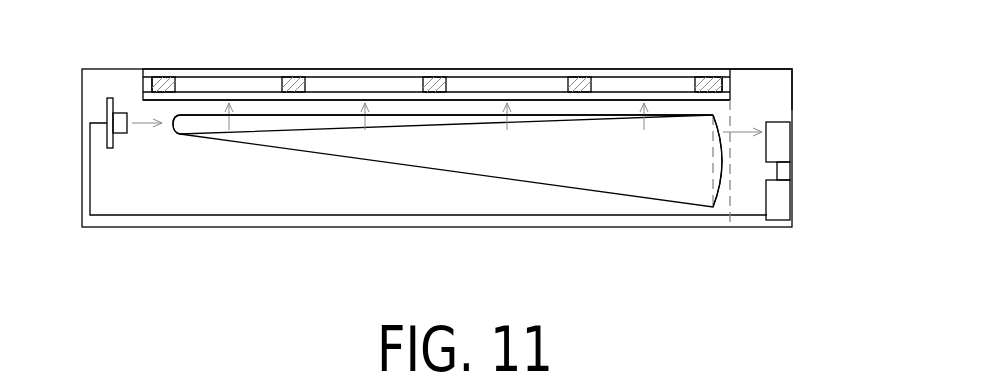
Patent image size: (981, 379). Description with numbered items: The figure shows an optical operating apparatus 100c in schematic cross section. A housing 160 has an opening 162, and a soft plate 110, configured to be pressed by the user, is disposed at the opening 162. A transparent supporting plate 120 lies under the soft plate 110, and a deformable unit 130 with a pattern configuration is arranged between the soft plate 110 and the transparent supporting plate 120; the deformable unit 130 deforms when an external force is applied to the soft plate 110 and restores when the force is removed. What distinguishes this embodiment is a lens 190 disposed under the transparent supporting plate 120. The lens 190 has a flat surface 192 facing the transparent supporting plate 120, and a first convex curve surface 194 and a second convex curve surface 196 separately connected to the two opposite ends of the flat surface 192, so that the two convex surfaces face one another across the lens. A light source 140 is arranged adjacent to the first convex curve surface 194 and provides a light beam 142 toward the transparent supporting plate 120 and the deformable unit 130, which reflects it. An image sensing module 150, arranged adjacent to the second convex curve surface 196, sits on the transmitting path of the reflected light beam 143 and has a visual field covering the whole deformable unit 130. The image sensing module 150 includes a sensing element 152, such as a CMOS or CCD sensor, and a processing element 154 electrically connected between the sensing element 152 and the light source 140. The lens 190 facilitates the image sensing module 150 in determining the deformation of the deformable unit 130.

The optical operating apparatus 100c is at (850, 298).
The soft plate 110 is at (355, 73).
The transparent supporting plate 120 is at (723, 100).
The deformable unit 130 is at (713, 87).
The light source 140 is at (107, 98).
The light beam 142 is at (138, 123).
The reflected light beam 143 is at (742, 128).
The image sensing module 150 is at (841, 171).
The sensing element 152 is at (787, 140).
The processing element 154 is at (810, 200).
The housing 160 is at (513, 230).
The opening 162 is at (727, 65).
The lens 190 is at (663, 190).
The flat surface 192 is at (211, 112).
The first convex curve surface 194 is at (172, 116).
The second convex curve surface 196 is at (719, 188).